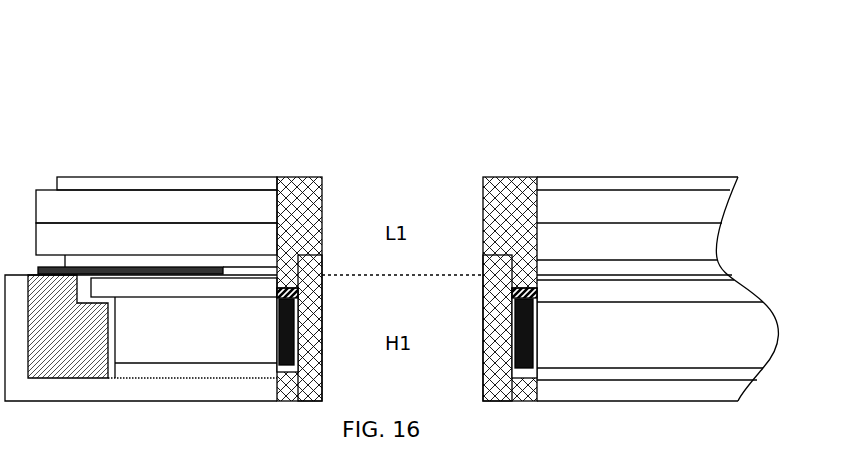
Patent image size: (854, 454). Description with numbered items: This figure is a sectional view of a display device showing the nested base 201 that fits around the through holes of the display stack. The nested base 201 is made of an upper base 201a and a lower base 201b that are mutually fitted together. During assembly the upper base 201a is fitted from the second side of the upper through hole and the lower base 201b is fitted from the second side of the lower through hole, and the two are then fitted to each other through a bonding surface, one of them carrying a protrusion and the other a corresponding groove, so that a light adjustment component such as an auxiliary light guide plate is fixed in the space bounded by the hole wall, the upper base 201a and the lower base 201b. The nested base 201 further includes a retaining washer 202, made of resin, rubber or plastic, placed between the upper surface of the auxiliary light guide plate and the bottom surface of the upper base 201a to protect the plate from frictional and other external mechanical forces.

The nested base 201 is at (325, 63).
The upper base 201a is at (295, 210).
The lower base 201b is at (322, 292).
The retaining washer 202 is at (534, 262).